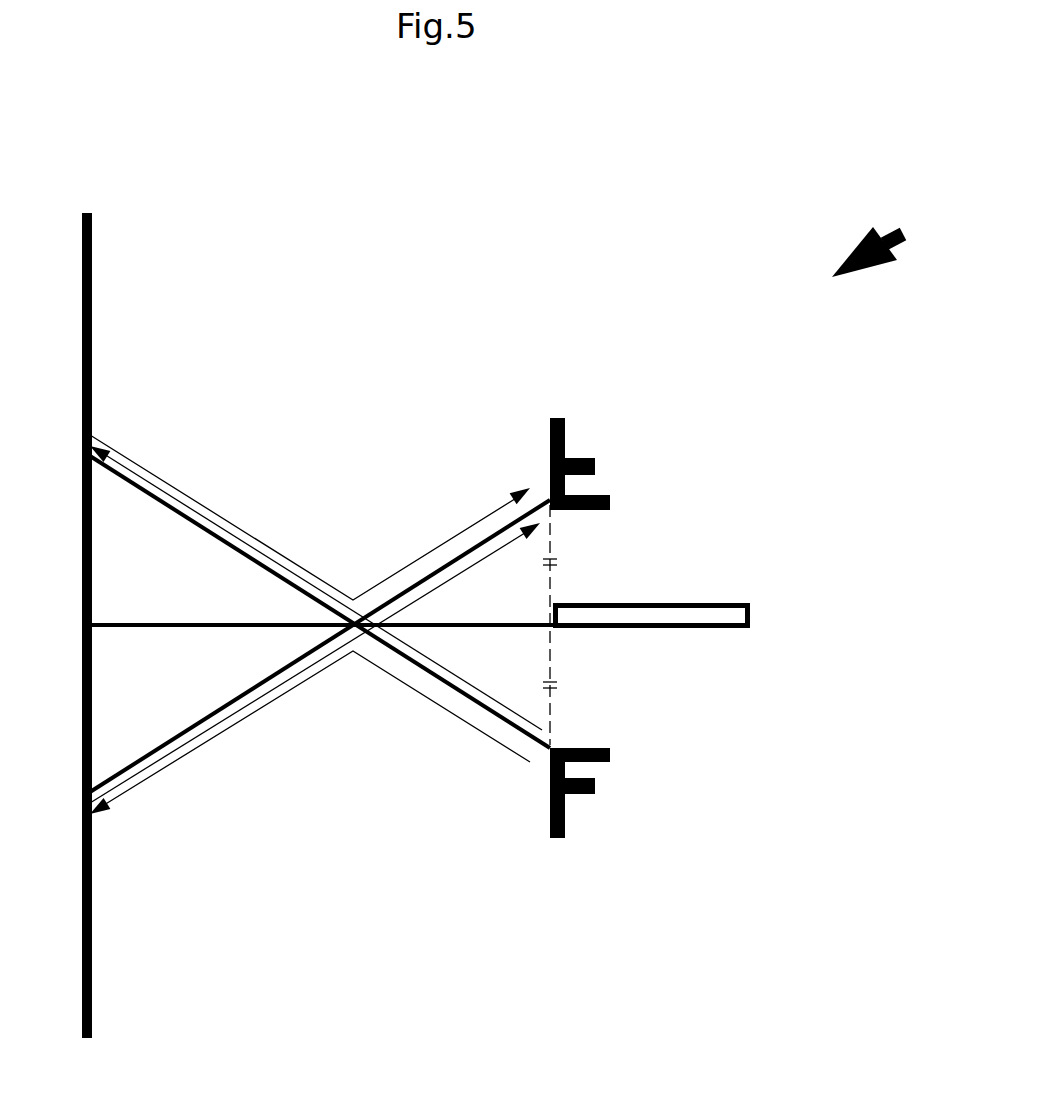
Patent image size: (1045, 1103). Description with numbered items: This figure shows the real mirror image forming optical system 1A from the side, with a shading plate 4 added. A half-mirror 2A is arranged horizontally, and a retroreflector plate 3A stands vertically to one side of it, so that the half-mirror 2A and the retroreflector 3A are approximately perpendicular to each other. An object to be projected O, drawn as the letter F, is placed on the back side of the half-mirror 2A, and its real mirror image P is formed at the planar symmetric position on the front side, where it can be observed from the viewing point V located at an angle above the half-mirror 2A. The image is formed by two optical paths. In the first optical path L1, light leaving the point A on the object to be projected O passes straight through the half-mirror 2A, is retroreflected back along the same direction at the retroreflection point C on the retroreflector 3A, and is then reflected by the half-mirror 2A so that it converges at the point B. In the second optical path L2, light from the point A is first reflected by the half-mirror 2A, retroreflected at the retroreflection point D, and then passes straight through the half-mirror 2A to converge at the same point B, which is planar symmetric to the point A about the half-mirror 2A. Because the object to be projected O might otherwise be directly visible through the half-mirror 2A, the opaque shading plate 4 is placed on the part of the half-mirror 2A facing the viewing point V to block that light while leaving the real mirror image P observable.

The real mirror image forming optical system 1A is at (349, 246).
The half-mirror 2A is at (133, 616).
The retroreflector plate 3A is at (97, 276).
The shading plate 4 is at (712, 603).
The first optical path L1 is at (274, 547).
The second optical path L2 is at (247, 705).
The real mirror image P is at (528, 435).
The point A is at (555, 748).
The point B is at (555, 503).
The retroreflection point C is at (64, 462).
The retroreflection point D is at (67, 795).
The object to be projected O is at (524, 813).
The viewing point V is at (882, 236).